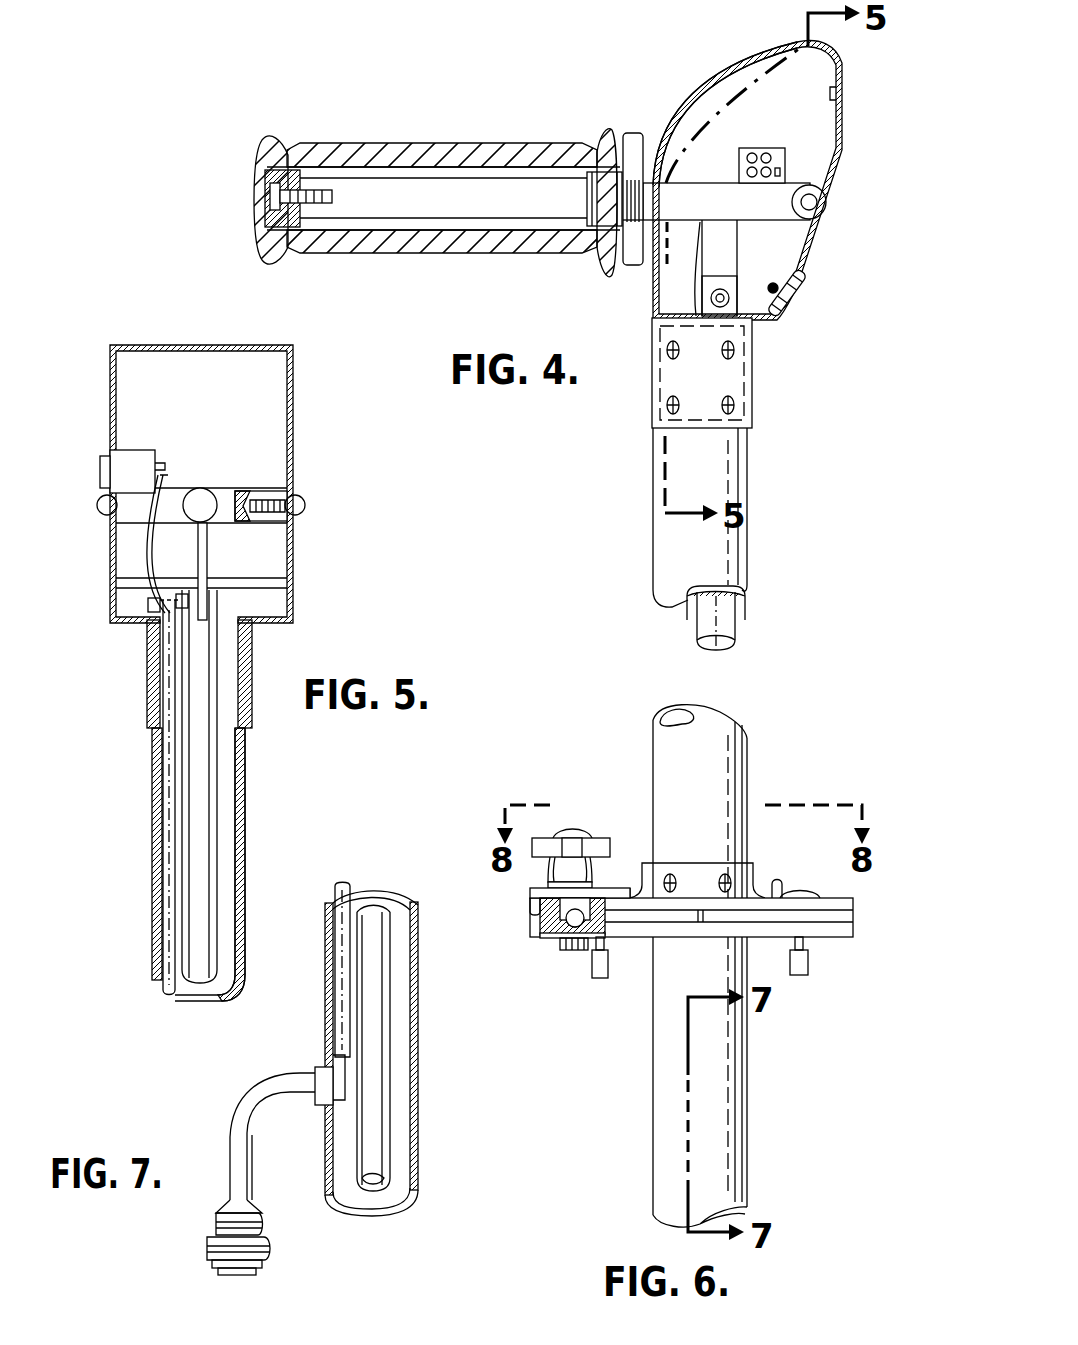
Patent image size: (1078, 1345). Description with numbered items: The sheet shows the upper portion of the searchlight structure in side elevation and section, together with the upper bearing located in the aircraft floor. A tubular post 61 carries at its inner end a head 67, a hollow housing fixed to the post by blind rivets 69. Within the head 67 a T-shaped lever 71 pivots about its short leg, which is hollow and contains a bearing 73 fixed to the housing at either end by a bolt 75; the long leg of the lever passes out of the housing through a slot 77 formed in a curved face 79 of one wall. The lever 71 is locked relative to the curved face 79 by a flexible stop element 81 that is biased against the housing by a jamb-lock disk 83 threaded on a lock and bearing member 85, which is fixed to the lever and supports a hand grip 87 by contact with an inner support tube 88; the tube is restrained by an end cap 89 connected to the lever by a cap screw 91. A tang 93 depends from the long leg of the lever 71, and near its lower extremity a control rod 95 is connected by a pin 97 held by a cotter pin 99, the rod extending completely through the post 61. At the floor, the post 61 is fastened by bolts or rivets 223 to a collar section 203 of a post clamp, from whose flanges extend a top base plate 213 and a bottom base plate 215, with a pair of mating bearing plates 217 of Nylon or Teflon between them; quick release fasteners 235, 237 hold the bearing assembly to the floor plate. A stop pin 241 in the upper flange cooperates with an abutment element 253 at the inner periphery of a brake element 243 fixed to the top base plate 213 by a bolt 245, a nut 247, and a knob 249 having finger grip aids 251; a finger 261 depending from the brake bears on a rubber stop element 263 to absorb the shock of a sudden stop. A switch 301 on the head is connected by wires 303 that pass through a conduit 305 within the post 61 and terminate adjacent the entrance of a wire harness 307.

In FIG. 4, the tubular post 61 is at (730, 565).
In FIG. 5, the tubular post 61 is at (248, 820).
In FIG. 7, the tubular post 61 is at (419, 1154).
In FIG. 6, the tubular post 61 is at (735, 752).
In FIG. 4, the head 67 is at (843, 138).
In FIG. 5, the head 67 is at (295, 426).
In FIG. 4, the blind rivets 69 is at (732, 352).
In FIG. 4, the T-shaped lever 71 is at (400, 205).
In FIG. 5, the T-shaped lever 71 is at (194, 490).
In FIG. 5, the bearing 73 is at (245, 498).
In FIG. 5, the bolt 75 is at (304, 500).
In FIG. 4, the slot 77 is at (780, 62).
In FIG. 4, the curved face 79 is at (716, 100).
In FIG. 4, the stop element 81 is at (640, 266).
In FIG. 4, the jamb-lock disk 83 is at (633, 134).
In FIG. 4, the lock and bearing member 85 is at (598, 215).
In FIG. 4, the hand grip 87 is at (520, 147).
In FIG. 4, the inner support tube 88 is at (418, 150).
In FIG. 4, the end cap 89 is at (290, 145).
In FIG. 4, the cap screw 91 is at (268, 190).
In FIG. 4, the tang 93 is at (738, 242).
In FIG. 5, the tang 93 is at (208, 552).
In FIG. 4, the control rod 95 is at (736, 626).
In FIG. 5, the control rod 95 is at (218, 654).
In FIG. 7, the control rod 95 is at (378, 1092).
In FIG. 4, the pin 97 is at (723, 290).
In FIG. 5, the pin 97 is at (162, 646).
In FIG. 4, the cotter pin 99 is at (750, 302).
In FIG. 6, the collar section 203 is at (746, 888).
In FIG. 6, the top base plate 213 is at (832, 900).
In FIG. 6, the bottom base plate 215 is at (822, 936).
In FIG. 6, the bearing plates 217 is at (690, 924).
In FIG. 6, the bolts or rivets 223 is at (728, 876).
In FIG. 6, the quick release fastener 235 is at (798, 972).
In FIG. 6, the quick release fastener 237 is at (600, 972).
In FIG. 6, the stop pin 241 is at (783, 890).
In FIG. 6, the brake element 243 is at (535, 892).
In FIG. 6, the bolt 245 is at (565, 948).
In FIG. 6, the nut 247 is at (560, 922).
In FIG. 6, the knob 249 is at (573, 830).
In FIG. 6, the finger grip aids 251 is at (578, 846).
In FIG. 6, the abutment element 253 is at (622, 888).
In FIG. 6, the finger 261 is at (535, 908).
In FIG. 6, the rubber stop element 263 is at (548, 937).
In FIG. 4, the switch 301 is at (812, 132).
In FIG. 5, the switch 301 is at (110, 468).
In FIG. 4, the wires 303 is at (698, 306).
In FIG. 5, the wires 303 is at (148, 548).
In FIG. 7, the wires 303 is at (320, 1064).
In FIG. 4, the conduit 305 is at (688, 610).
In FIG. 5, the conduit 305 is at (163, 792).
In FIG. 7, the conduit 305 is at (342, 948).
In FIG. 7, the wire harness 307 is at (230, 1130).